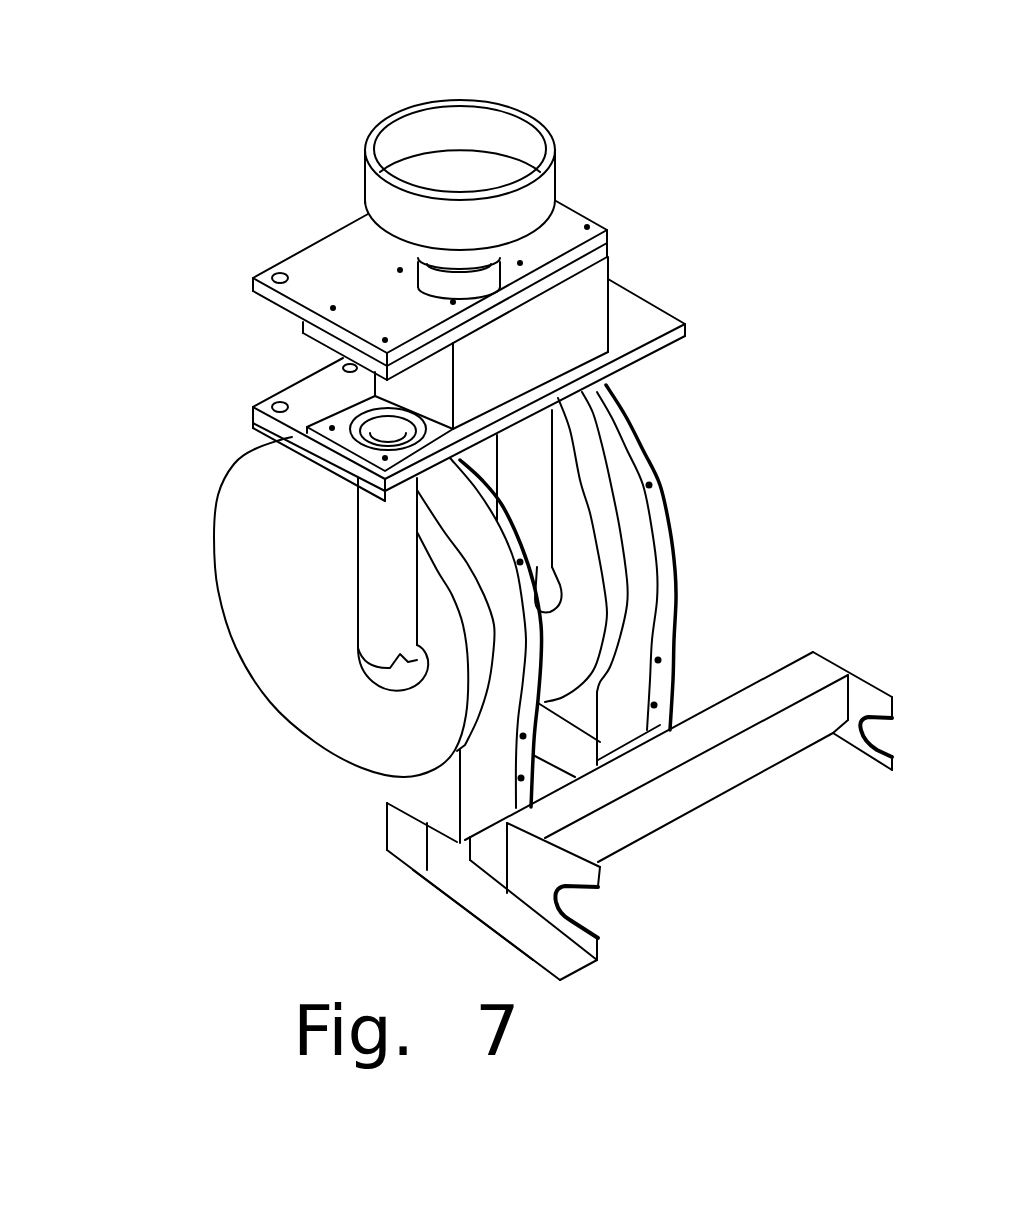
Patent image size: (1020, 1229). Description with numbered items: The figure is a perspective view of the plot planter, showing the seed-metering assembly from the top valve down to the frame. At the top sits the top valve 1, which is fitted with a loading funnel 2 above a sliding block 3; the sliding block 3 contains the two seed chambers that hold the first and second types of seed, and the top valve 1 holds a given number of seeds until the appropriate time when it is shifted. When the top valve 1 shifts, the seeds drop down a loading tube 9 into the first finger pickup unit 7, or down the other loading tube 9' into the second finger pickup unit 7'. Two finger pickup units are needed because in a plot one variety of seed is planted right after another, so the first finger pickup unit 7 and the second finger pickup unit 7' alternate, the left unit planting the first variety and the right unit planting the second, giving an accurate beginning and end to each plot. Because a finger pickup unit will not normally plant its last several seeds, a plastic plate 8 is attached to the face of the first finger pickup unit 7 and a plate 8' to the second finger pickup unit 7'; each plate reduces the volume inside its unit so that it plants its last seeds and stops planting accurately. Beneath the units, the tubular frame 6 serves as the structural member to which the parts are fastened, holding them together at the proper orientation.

The top valve 1 is at (633, 200).
The loading funnel 2 is at (525, 92).
The sliding block 3 is at (588, 310).
The tubular frame 6 is at (623, 864).
The first finger pickup unit 7 is at (387, 661).
The second finger pickup unit 7' is at (717, 557).
The plastic plate 8 is at (283, 607).
The plastic plate 8' is at (683, 578).
The loading tube 9 is at (241, 584).
The loading tube 9' is at (654, 500).